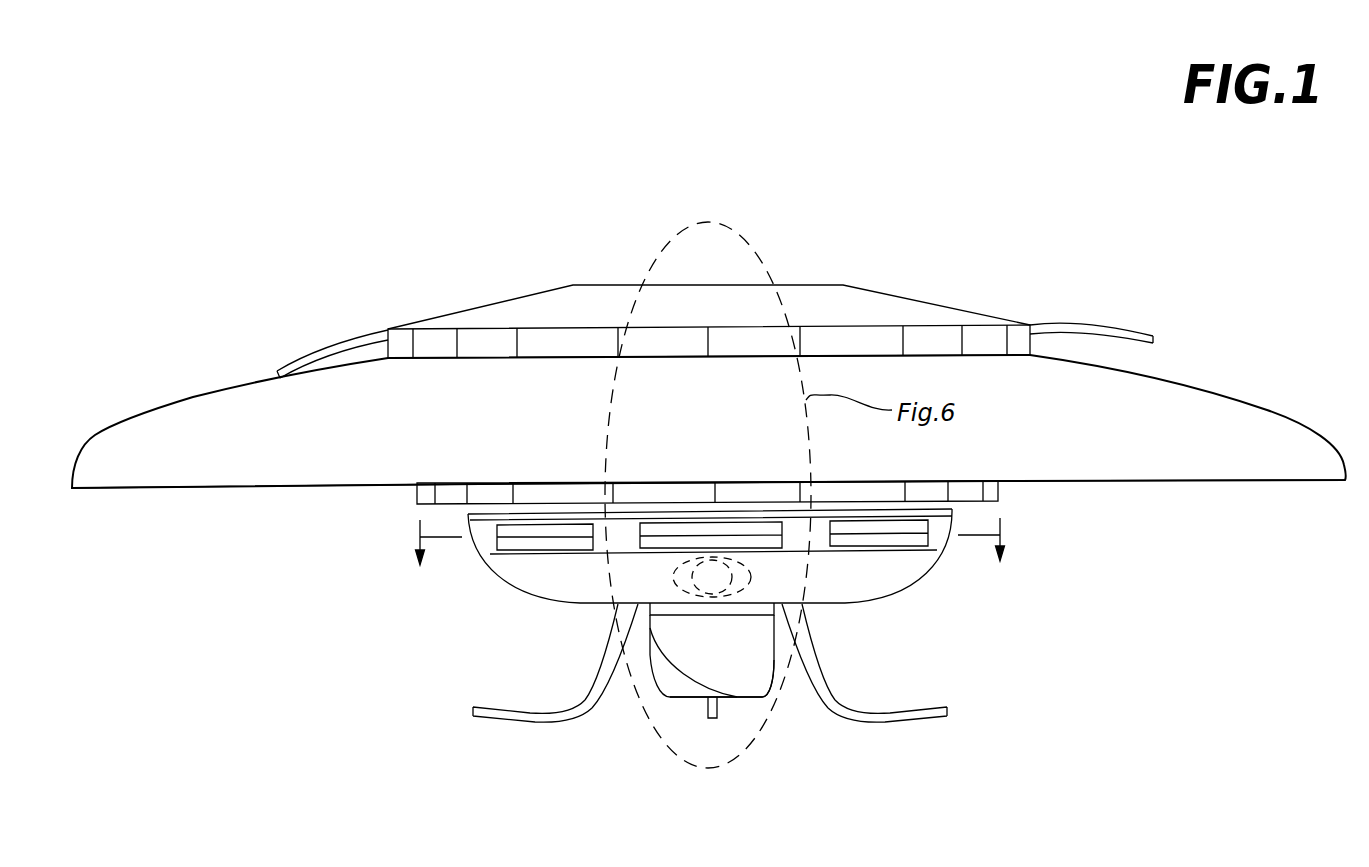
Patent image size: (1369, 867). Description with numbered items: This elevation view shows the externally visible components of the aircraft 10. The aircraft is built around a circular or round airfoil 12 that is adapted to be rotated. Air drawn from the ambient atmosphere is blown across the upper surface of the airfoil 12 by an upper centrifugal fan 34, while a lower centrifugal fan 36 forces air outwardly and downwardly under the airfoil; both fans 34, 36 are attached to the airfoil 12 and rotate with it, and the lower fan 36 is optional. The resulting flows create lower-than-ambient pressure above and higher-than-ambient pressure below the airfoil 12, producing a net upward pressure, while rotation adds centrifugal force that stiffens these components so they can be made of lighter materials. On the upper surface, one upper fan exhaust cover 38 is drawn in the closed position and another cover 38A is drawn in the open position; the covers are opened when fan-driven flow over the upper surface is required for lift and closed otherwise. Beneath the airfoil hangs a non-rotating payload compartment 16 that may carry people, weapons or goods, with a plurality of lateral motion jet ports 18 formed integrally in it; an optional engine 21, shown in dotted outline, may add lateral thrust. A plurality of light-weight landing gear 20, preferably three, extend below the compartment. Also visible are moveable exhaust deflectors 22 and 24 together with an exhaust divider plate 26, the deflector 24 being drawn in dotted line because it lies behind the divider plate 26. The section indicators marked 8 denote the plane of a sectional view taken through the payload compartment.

The aircraft 10 is at (228, 494).
The airfoil 12 is at (1180, 380).
The payload compartment 16 is at (513, 583).
The lateral motion jet ports 18 is at (910, 548).
The landing gear 20 is at (575, 712).
The engine 21 is at (660, 580).
The exhaust deflector 22 is at (646, 668).
The exhaust deflector 24 is at (762, 643).
The exhaust divider plate 26 is at (774, 684).
The upper centrifugal fan 34 is at (887, 290).
The lower centrifugal fan 36 is at (998, 492).
The upper fan exhaust cover 38 is at (338, 340).
The upper fan exhaust cover 38A is at (1108, 323).
The section line 8- 8 is at (710, 556).